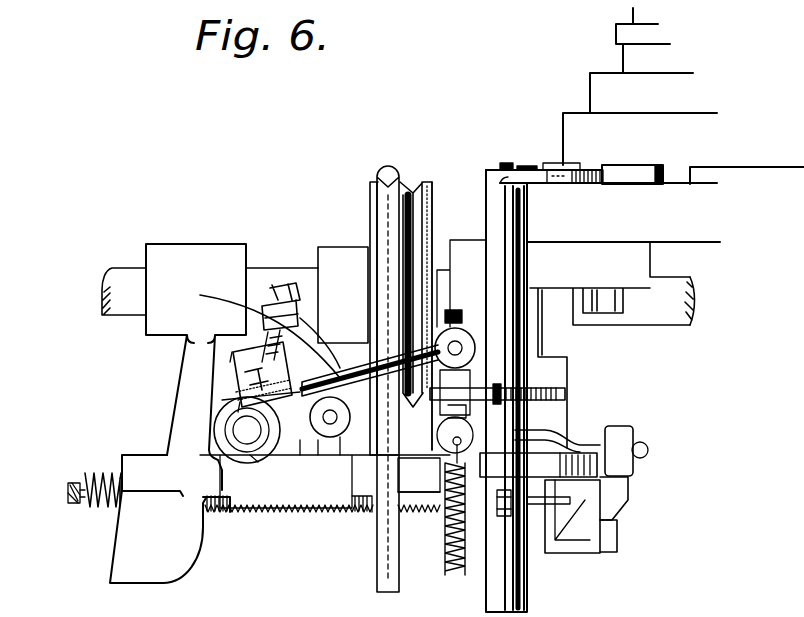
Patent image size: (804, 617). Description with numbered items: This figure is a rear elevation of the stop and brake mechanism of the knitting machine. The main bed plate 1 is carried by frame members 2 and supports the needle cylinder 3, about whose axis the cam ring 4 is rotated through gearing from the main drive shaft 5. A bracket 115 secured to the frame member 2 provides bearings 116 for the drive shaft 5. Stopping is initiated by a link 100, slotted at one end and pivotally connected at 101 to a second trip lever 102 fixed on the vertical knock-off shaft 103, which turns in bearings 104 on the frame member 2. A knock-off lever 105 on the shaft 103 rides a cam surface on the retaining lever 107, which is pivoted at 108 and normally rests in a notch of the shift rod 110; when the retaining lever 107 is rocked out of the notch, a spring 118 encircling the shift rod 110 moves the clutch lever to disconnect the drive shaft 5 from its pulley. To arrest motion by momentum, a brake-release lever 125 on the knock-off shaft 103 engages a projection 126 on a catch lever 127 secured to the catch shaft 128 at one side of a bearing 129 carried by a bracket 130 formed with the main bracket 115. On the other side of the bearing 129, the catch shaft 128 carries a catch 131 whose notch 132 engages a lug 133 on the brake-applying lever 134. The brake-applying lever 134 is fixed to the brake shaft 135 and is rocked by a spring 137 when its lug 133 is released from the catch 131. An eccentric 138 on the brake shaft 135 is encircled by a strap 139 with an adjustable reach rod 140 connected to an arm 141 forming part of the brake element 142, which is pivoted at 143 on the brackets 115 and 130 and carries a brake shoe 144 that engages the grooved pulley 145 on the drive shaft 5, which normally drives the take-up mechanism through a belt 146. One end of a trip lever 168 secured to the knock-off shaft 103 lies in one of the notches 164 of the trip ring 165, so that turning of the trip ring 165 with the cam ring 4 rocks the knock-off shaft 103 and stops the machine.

The main bed plate 1 is at (731, 230).
The frame member 2 is at (528, 594).
The needle cylinder 3 is at (616, 40).
The cam ring 4 is at (566, 112).
The main drive shaft 5 is at (114, 270).
The link 100 is at (600, 503).
The pivotal connection 101 is at (573, 448).
The second trip lever 102 is at (540, 478).
The knock-off shaft 103 is at (507, 160).
The bearing 104 is at (531, 270).
The knock-off lever 105 is at (648, 450).
The retaining lever 107 is at (628, 490).
The pivot 108 is at (618, 531).
The shift rod 110 is at (70, 489).
The bracket 115 is at (168, 554).
The bearing 116 is at (172, 244).
The spring 118 is at (80, 505).
The brake-release lever 125 is at (568, 395).
The projection 126 is at (500, 382).
The catch lever 127 is at (464, 406).
The catch shaft 128 is at (458, 340).
The bearing 129 is at (454, 322).
The bracket 130 is at (357, 349).
The catch 131 is at (425, 470).
The notch 132 is at (419, 485).
The lug 133 is at (455, 440).
The brake-applying lever 134 is at (337, 460).
The brake shaft 135 is at (230, 430).
The spring 137 is at (446, 540).
The eccentric 138 is at (232, 402).
The strap 139 is at (230, 370).
The adjustable reach rod 140 is at (285, 284).
The arm 141 is at (257, 313).
The brake element 142 is at (310, 470).
The pivot 143 is at (319, 345).
The brake shoe 144 is at (368, 488).
The grooved pulley 145 is at (414, 190).
The belt 146 is at (378, 571).
The notch 164 is at (682, 170).
The trip ring 165 is at (623, 165).
The trip lever 168 is at (582, 186).